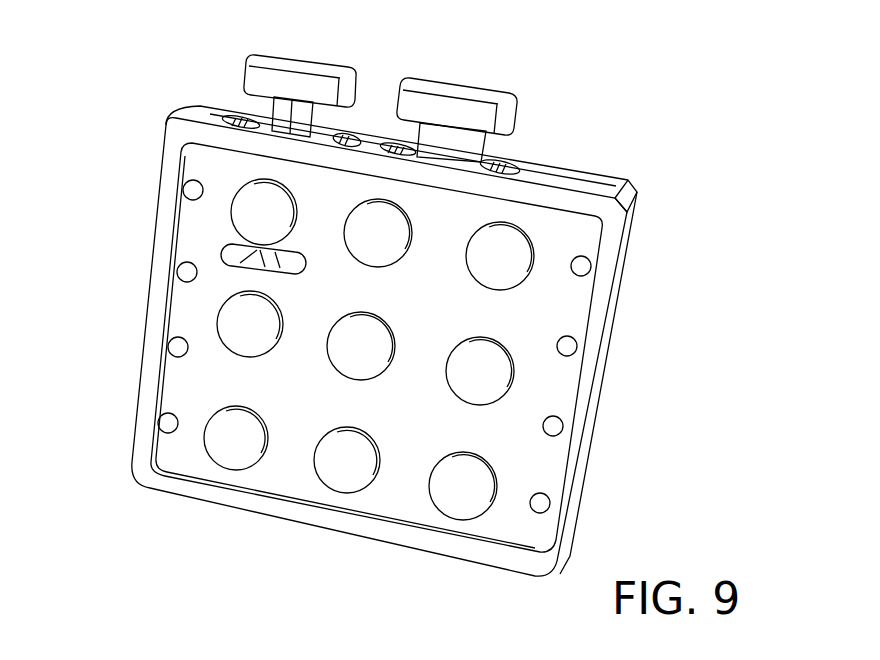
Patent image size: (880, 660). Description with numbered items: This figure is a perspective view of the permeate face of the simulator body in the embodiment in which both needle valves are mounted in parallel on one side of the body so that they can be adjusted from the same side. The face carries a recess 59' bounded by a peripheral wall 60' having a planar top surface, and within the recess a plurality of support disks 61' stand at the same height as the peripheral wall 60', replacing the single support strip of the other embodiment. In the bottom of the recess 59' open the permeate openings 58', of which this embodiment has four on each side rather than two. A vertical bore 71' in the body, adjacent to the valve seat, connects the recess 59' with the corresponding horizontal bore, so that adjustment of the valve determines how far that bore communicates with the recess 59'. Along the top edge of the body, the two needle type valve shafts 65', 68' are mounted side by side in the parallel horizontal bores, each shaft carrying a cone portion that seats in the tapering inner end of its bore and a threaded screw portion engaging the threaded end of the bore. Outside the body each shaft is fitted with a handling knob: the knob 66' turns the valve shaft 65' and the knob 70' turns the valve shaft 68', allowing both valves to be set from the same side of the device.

The permeate openings 58' is at (381, 346).
The recess 59' is at (376, 361).
The peripheral wall 60' is at (427, 341).
The support disks 61' is at (369, 400).
The valve shaft 65' is at (519, 142).
The handling knob 66' is at (461, 67).
The valve shaft 68' is at (333, 120).
The handling knob 70' is at (300, 68).
The vertical bore 71' is at (194, 198).